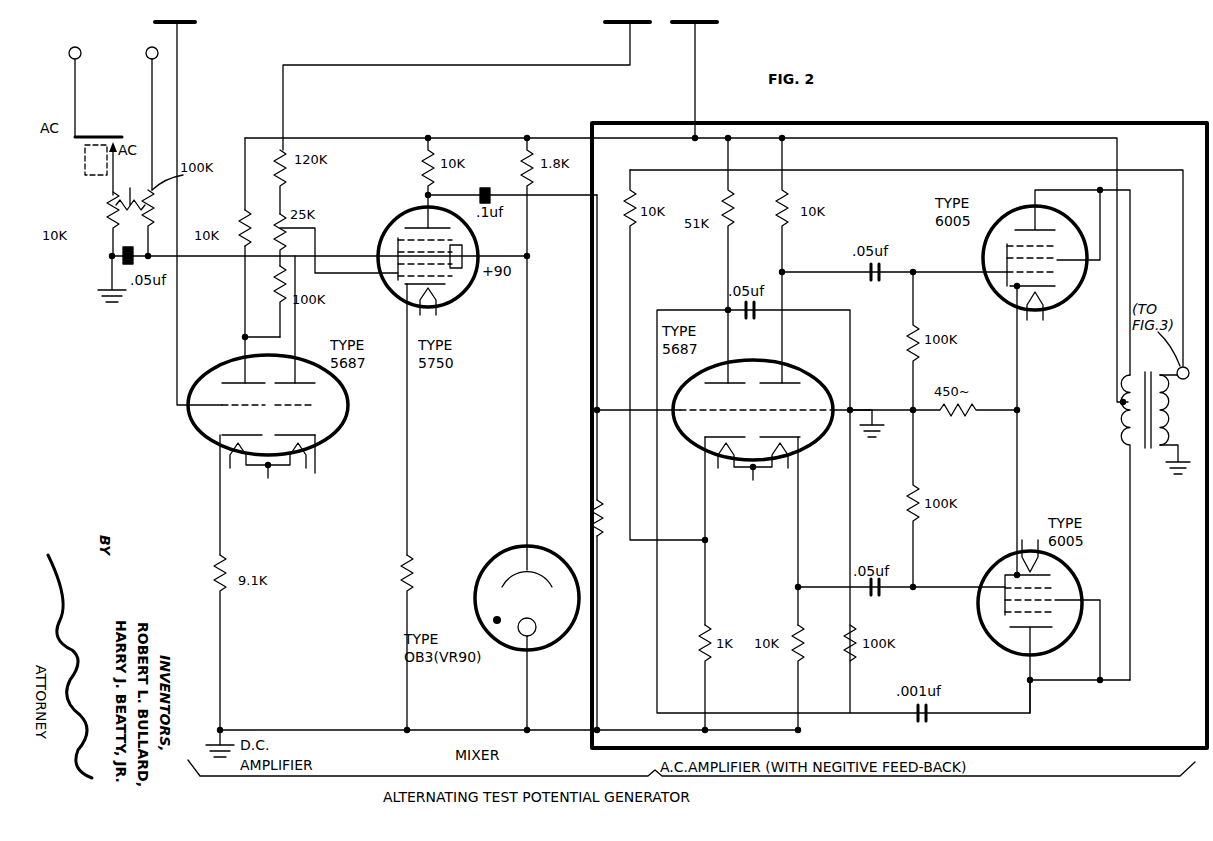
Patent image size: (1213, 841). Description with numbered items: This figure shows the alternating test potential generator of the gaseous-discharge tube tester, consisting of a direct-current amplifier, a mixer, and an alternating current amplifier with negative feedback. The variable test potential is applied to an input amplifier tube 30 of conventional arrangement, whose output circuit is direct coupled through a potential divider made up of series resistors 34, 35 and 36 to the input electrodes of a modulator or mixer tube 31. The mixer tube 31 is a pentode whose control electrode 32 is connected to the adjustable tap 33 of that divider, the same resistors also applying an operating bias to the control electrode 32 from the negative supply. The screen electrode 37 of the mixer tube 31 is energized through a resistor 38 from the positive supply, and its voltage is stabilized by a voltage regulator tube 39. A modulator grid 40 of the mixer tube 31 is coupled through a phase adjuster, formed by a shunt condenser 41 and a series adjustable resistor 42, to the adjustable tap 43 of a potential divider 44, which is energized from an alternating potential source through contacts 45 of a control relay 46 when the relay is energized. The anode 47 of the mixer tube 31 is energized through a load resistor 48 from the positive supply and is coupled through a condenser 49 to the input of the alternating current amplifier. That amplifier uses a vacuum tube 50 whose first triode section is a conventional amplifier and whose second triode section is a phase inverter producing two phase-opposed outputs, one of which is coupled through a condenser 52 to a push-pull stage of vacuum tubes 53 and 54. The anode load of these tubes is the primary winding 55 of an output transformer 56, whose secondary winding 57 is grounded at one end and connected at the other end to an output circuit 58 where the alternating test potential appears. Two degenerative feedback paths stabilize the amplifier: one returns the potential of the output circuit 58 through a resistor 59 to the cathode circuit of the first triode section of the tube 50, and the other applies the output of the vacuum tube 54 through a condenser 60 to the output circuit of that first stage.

The input amplifier tube 30 is at (198, 440).
The modulator or mixer tube 31 is at (466, 297).
The control electrode 32 is at (420, 376).
The adjustable tap 33 is at (300, 232).
The series resistor 34 is at (278, 300).
The series resistor 35 is at (262, 214).
The series resistor 36 is at (278, 168).
The screen electrode 37 is at (462, 250).
The resistor 38 is at (524, 168).
The voltage regulator tube 39 is at (500, 562).
The modulator grid 40 is at (398, 264).
The shunt condenser 41 is at (134, 240).
The series adjustable resistor 42 is at (154, 199).
The adjustable tap 43 is at (130, 191).
The potential divider 44 is at (106, 204).
The contacts 45 is at (92, 137).
The control relay 46 is at (85, 163).
The anode 47 is at (410, 222).
The load resistor 48 is at (420, 163).
The condenser 49 is at (488, 190).
The vacuum tube 50 is at (828, 362).
The condenser 52 is at (880, 592).
The vacuum tube 53 is at (1056, 298).
The vacuum tube 54 is at (990, 566).
The primary winding 55 is at (1121, 385).
The output transformer 56 is at (1153, 354).
The secondary winding 57 is at (1172, 404).
The output circuit 58 is at (1188, 362).
The resistor 59 is at (628, 198).
The condenser 60 is at (928, 718).